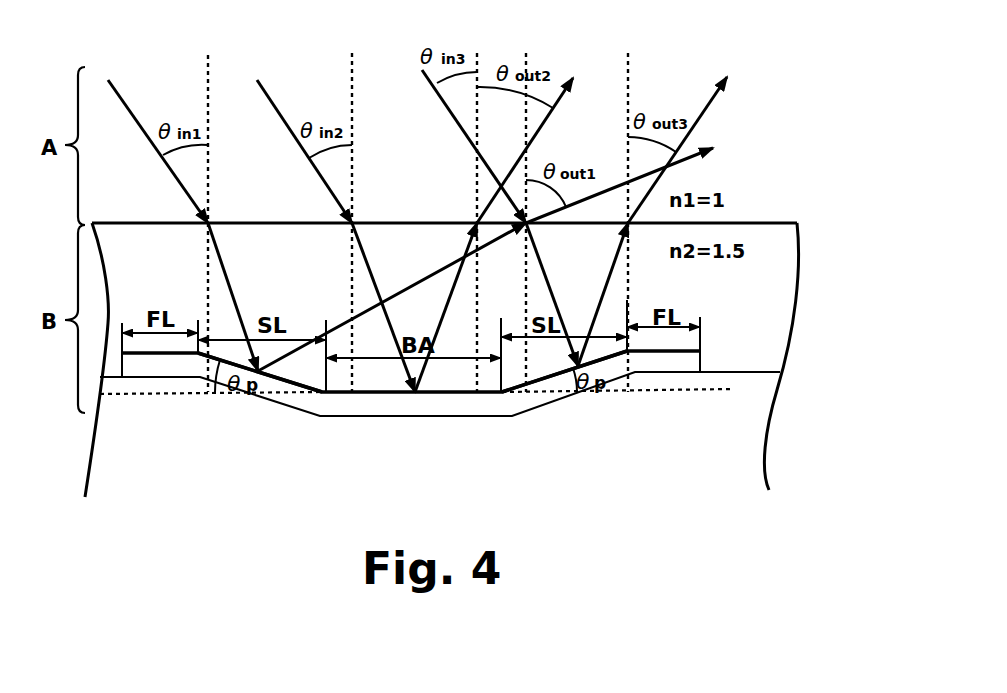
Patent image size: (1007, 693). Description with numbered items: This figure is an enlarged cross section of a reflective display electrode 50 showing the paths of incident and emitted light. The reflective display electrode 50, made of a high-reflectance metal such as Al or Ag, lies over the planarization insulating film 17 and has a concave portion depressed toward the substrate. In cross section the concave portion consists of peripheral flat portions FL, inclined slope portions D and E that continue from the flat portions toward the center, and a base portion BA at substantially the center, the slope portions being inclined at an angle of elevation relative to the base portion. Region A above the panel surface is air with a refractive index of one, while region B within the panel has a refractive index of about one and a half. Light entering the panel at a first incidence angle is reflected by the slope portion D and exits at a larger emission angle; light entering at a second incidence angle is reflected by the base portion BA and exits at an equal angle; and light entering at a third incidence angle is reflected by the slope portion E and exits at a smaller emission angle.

The reflective display electrode 50 is at (683, 360).
The planarization insulating film 17 is at (748, 395).
The slope portion D is at (207, 381).
The slope portion E is at (612, 366).